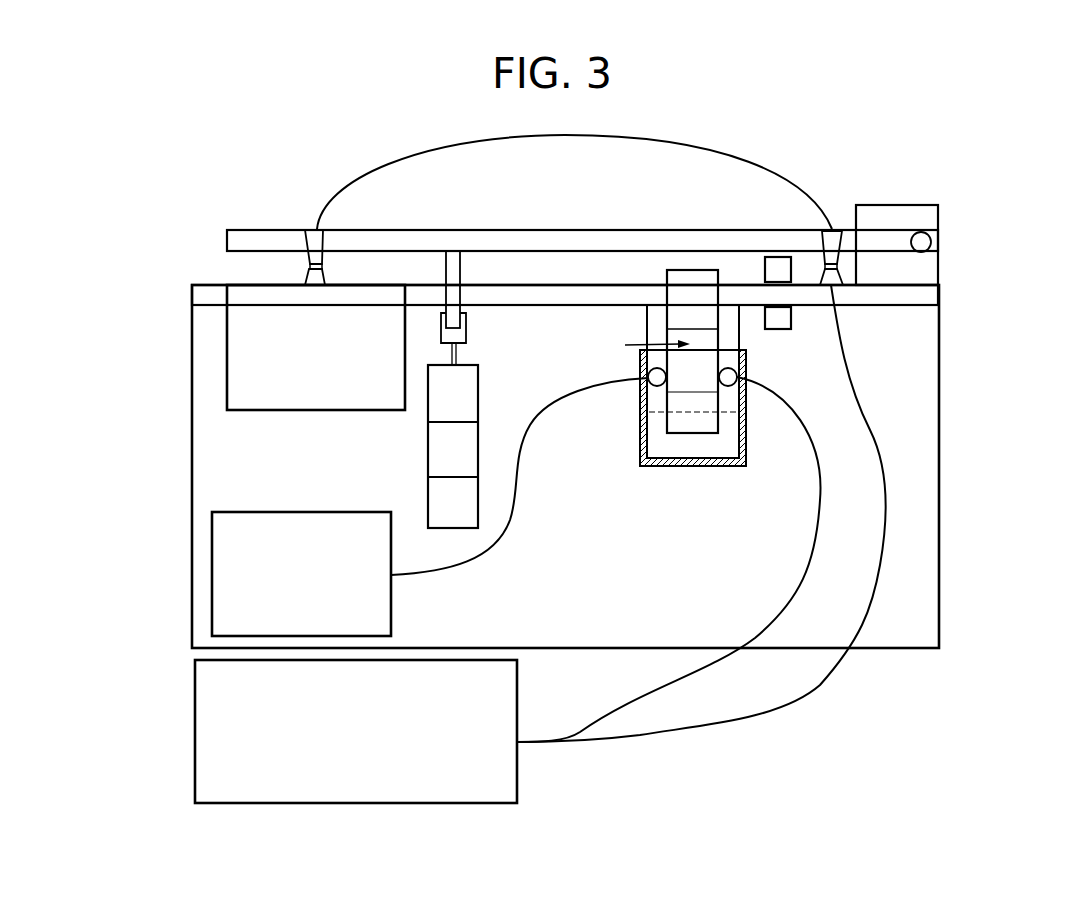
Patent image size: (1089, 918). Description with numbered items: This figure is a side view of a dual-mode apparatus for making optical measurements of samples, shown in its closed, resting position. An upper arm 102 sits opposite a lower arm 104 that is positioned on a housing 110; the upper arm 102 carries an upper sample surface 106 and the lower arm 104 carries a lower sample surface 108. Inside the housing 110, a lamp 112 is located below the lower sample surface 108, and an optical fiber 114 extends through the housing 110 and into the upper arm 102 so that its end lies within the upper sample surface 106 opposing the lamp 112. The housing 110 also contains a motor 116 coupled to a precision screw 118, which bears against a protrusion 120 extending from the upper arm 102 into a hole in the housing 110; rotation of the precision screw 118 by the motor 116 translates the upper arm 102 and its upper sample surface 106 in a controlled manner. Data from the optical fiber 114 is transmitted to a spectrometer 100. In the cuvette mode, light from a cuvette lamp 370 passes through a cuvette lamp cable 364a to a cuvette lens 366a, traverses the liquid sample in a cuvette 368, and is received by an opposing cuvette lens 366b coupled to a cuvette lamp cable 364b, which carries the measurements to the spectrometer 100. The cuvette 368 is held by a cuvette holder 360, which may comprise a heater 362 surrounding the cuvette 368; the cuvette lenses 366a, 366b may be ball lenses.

The spectrometer 100 is at (517, 775).
The upper arm 102 is at (243, 229).
The lower arm 104 is at (242, 295).
The upper sample surface 106 is at (325, 237).
The lower sample surface 108 is at (305, 270).
The housing 110 is at (939, 617).
The lamp 112 is at (238, 388).
The optical fiber 114 is at (717, 150).
The motor 116 is at (445, 463).
The precision screw 118 is at (458, 362).
The protrusion 120 is at (470, 270).
The cuvette holder 360 is at (747, 433).
The heater 362 is at (728, 425).
The cuvette lamp cable 364a is at (516, 513).
The cuvette lamp cable 364b is at (803, 590).
The cuvette lens 366a is at (650, 380).
The cuvette lens 366b is at (740, 372).
The cuvette 368 is at (637, 345).
The cuvette lamp 370 is at (213, 575).